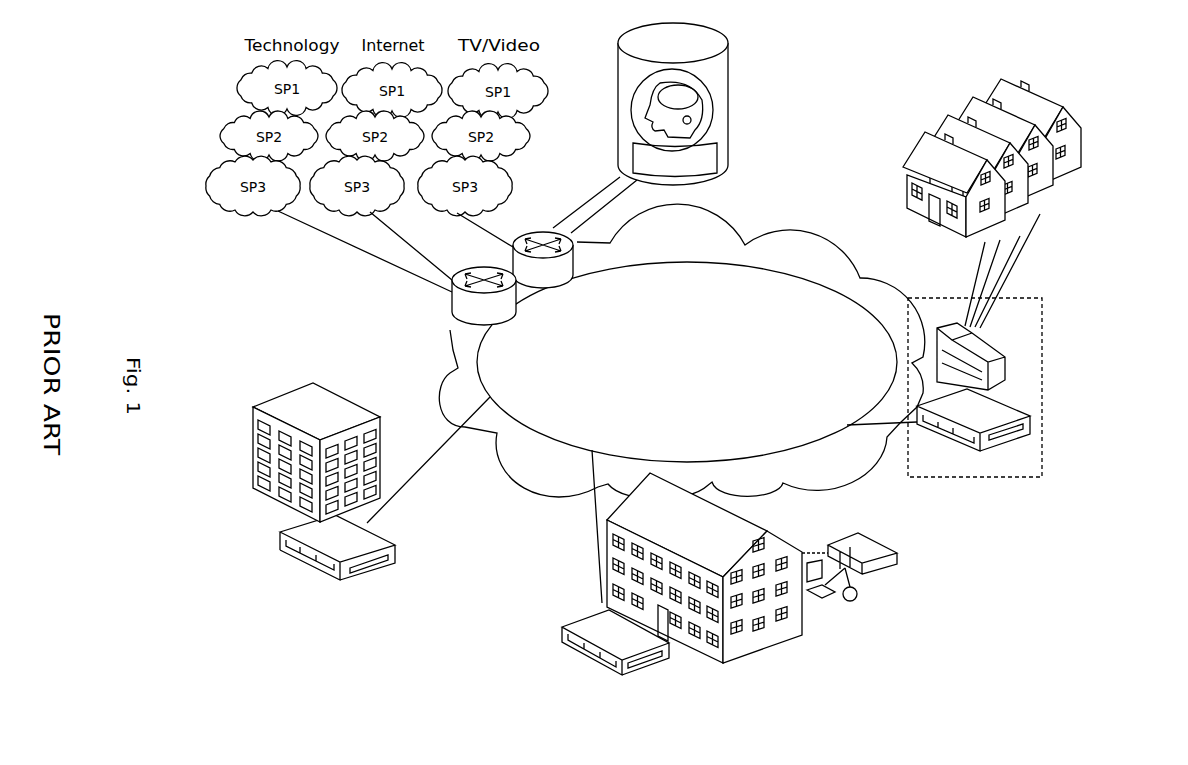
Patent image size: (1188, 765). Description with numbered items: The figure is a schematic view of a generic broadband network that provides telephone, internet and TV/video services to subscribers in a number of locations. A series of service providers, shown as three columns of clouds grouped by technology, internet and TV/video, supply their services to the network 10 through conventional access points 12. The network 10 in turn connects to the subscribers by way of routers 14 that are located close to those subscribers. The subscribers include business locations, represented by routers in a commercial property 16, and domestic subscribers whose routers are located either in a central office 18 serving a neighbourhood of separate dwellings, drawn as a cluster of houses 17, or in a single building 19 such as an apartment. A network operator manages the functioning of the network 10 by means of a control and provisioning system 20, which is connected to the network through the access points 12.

The network 10 is at (674, 365).
The access points 12 is at (455, 298).
The routers 14 is at (1013, 447).
The commercial property 16 is at (250, 453).
The houses 17 is at (1088, 153).
The central office 18 is at (1042, 367).
The single building 19 is at (765, 650).
The control and provisioning system 20 is at (732, 95).